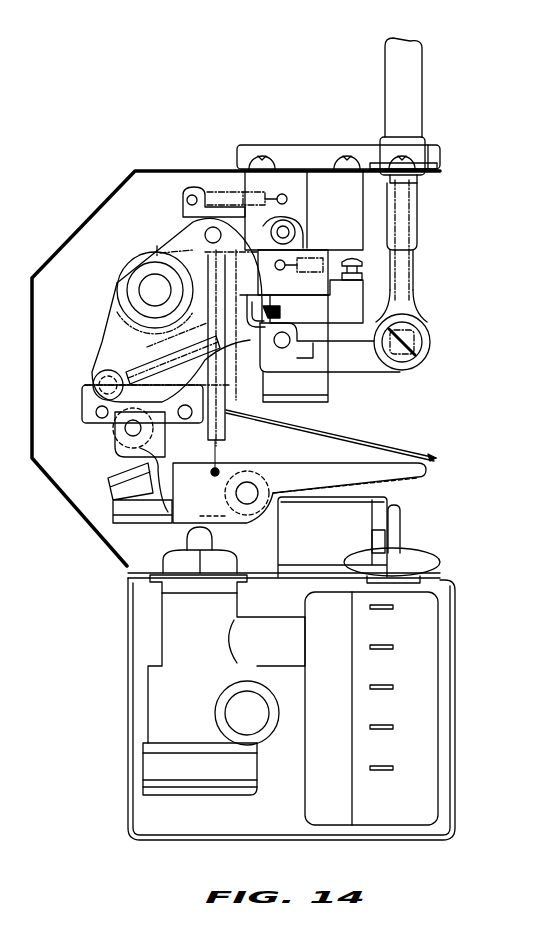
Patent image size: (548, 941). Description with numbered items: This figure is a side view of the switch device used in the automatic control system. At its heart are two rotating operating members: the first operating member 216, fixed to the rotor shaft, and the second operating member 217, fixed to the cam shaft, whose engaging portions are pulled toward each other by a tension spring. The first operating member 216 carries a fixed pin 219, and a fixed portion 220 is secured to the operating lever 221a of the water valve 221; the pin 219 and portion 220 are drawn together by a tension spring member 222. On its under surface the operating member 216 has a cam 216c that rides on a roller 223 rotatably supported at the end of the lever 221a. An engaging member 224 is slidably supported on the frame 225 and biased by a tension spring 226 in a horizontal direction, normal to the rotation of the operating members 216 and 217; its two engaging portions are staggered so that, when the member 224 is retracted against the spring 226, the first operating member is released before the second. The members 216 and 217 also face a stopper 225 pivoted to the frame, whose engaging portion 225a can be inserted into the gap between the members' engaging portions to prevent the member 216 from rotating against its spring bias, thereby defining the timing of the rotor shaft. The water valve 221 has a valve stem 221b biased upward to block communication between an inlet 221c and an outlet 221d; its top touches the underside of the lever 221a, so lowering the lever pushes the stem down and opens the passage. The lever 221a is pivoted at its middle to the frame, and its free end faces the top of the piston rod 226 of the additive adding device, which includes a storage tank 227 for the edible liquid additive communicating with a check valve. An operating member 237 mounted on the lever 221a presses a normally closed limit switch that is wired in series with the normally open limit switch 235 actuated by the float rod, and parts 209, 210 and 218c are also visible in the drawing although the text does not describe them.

The control rod 209 is at (412, 280).
The pawl / latch member 210 is at (273, 350).
The first operating member 216 is at (103, 340).
The cam 216c is at (108, 426).
The second operating member 217 is at (172, 243).
The pivot 218c is at (140, 366).
The fixed pin 219 is at (192, 233).
The fixed portion 220 is at (215, 477).
The water valve 221 is at (160, 706).
The operating lever 221a is at (153, 527).
The valve stem 221b is at (212, 545).
The inlet 221c is at (262, 740).
The outlet 221d is at (277, 632).
The tension spring member 222 is at (226, 402).
The roller 223 is at (122, 447).
The engaging member 224 is at (353, 291).
The frame 225 is at (292, 219).
The engaging portion 225a is at (173, 353).
The tension spring 226 is at (399, 535).
The storage tank 227 is at (448, 710).
The limit switch 235 is at (83, 405).
The operating member 237 is at (110, 482).